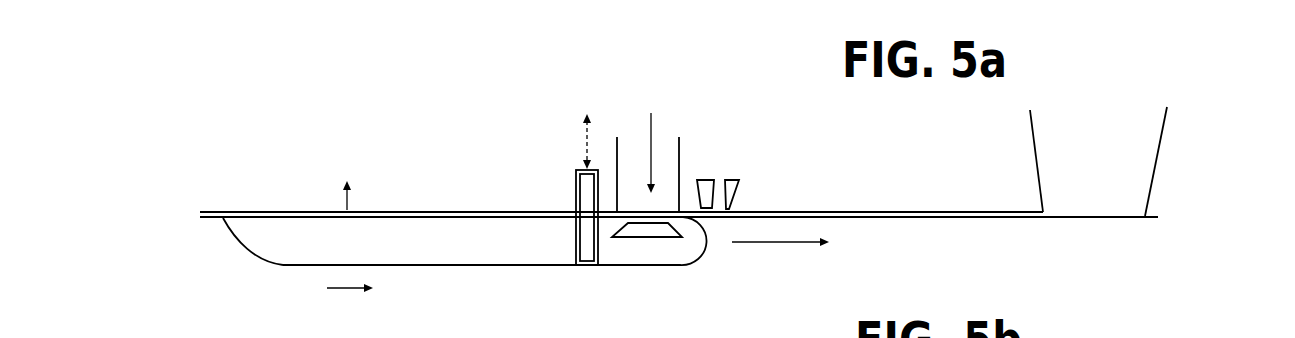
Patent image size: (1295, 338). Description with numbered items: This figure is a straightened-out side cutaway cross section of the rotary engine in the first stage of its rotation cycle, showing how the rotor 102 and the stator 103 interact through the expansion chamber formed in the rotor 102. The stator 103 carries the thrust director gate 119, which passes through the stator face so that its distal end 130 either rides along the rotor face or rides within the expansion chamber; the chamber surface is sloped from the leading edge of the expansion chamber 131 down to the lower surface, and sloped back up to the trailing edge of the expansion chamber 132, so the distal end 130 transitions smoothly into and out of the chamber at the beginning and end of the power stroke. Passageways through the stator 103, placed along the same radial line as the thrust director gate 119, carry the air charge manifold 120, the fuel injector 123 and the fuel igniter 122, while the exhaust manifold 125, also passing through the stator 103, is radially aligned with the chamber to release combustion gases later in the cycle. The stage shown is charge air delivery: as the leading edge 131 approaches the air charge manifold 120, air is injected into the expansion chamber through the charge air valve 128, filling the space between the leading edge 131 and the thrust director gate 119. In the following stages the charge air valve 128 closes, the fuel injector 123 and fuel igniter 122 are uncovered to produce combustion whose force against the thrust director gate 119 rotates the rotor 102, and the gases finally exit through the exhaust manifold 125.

The rotor 102 is at (340, 288).
The stator 103 is at (307, 210).
The thrust director gate 119 is at (551, 184).
The air charge manifold 120 is at (679, 137).
The fuel igniter 122 is at (735, 193).
The fuel injector 123 is at (707, 180).
The exhaust manifold 125 is at (1157, 158).
The charge air valve 128 is at (672, 255).
The distal end of the thrust director gate 130 is at (573, 258).
The leading edge of the expansion chamber 131 is at (705, 250).
The trailing edge of the expansion chamber 132 is at (225, 222).